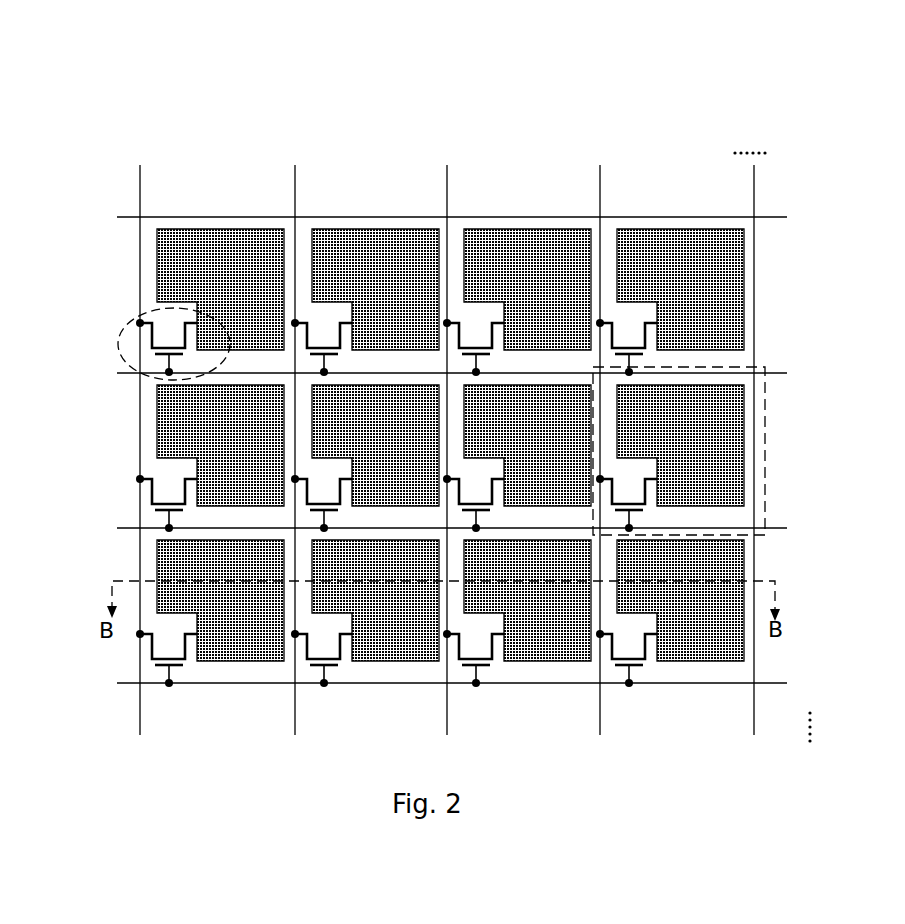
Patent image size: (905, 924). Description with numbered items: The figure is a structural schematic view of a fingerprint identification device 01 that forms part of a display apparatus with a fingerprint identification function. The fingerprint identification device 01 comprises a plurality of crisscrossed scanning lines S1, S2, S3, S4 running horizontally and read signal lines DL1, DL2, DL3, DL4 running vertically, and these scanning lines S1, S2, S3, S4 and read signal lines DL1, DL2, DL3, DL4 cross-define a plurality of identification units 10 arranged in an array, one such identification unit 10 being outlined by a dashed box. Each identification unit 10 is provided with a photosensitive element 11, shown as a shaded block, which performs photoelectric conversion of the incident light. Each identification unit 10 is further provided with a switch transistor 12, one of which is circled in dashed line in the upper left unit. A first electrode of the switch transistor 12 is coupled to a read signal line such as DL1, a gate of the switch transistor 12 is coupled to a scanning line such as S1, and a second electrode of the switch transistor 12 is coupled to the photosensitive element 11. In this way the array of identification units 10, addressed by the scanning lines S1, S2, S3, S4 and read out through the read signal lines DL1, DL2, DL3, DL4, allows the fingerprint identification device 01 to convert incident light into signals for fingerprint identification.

The fingerprint identification device 01 is at (436, 381).
The identification unit 10 is at (765, 457).
The photosensitive element 11 is at (168, 265).
The switch transistor 12 is at (120, 343).
The read signal line DL1 is at (139, 438).
The read signal line DL2 is at (293, 438).
The read signal line DL3 is at (443, 438).
The read signal line DL4 is at (596, 437).
The scanning line S1 is at (470, 217).
The scanning line S2 is at (470, 373).
The scanning line S3 is at (470, 528).
The scanning line S4 is at (470, 683).